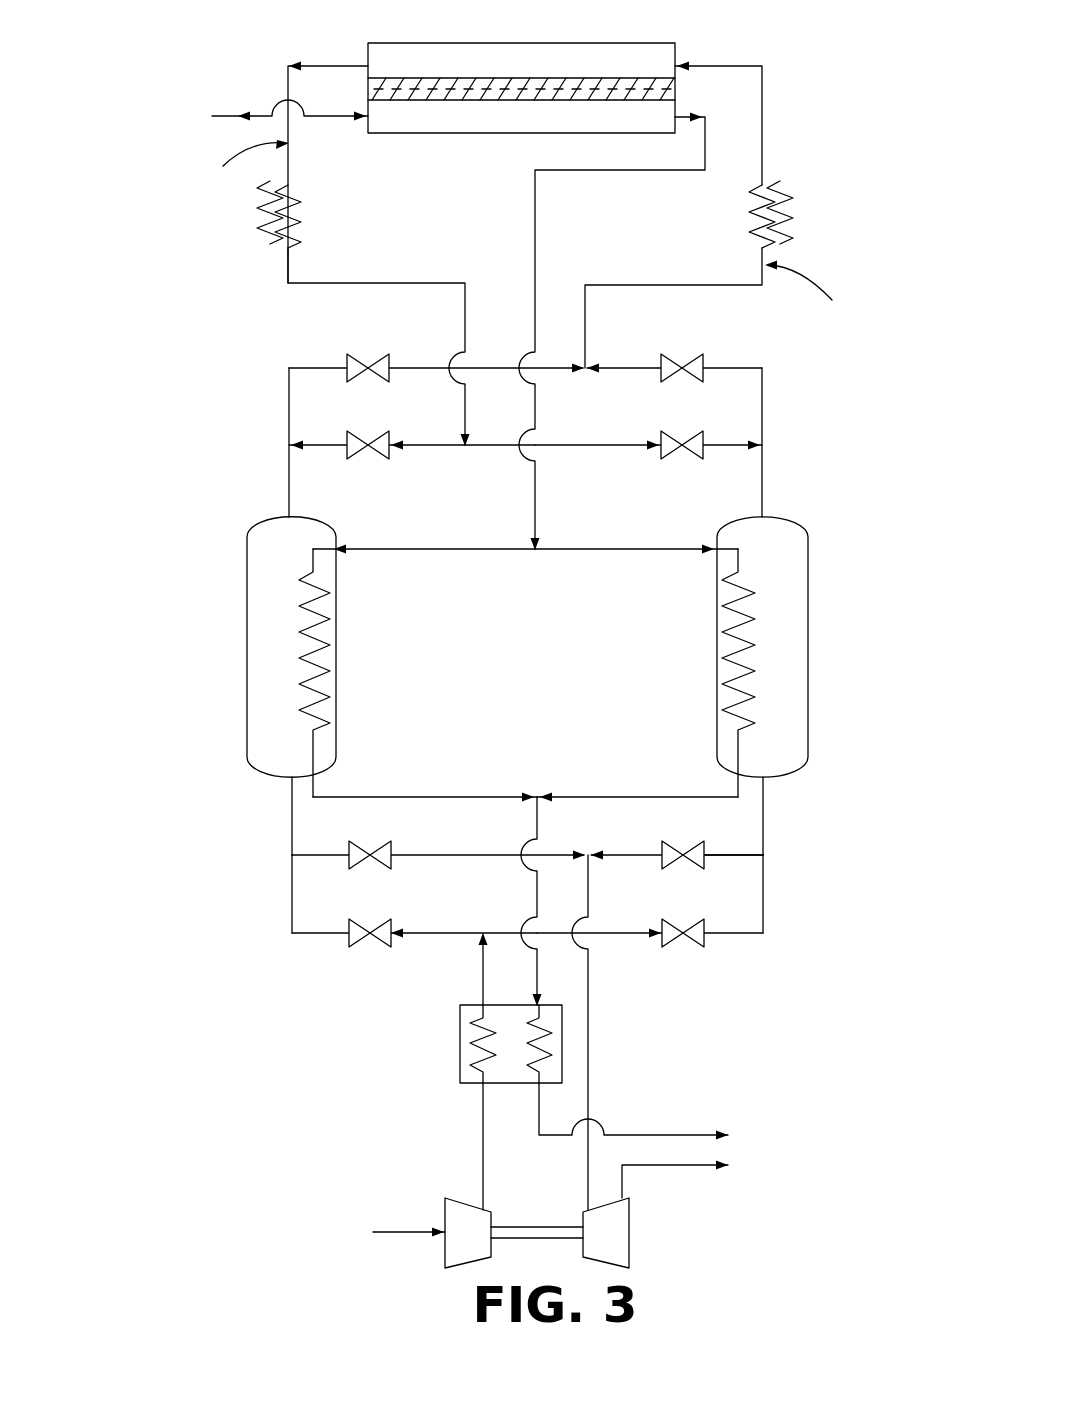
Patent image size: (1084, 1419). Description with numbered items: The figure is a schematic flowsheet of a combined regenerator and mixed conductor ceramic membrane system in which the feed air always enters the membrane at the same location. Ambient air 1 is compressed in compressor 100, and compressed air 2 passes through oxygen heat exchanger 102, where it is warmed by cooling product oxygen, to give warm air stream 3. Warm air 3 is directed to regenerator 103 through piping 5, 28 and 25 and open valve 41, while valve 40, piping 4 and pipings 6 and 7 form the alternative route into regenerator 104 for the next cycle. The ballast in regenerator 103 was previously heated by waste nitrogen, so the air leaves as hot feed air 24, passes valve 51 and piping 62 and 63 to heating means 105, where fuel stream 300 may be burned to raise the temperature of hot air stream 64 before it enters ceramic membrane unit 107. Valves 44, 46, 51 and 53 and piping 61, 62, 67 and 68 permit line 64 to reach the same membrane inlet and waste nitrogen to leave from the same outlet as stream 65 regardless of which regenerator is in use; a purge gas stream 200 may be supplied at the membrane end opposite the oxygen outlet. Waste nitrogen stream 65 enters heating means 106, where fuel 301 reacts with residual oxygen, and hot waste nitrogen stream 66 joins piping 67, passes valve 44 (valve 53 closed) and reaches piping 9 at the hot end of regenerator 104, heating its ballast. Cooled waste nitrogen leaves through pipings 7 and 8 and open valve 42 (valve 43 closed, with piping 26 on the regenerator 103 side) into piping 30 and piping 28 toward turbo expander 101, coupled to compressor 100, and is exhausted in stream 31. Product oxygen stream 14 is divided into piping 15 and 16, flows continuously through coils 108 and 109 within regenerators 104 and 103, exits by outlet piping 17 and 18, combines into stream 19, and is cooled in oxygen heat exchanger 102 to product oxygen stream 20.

The ambient air 1 is at (393, 1243).
The compressed air 2 is at (481, 1163).
The warm air stream 3 is at (480, 979).
The piping 4 is at (436, 931).
The piping 5 is at (623, 931).
The piping 6 is at (292, 893).
The piping 7 is at (291, 797).
The piping 8 is at (324, 853).
The piping 9 is at (289, 497).
The product oxygen stream 14 is at (533, 214).
The piping 15 is at (425, 548).
The piping 16 is at (616, 548).
The outlet piping 17 is at (434, 796).
The outlet piping 18 is at (612, 796).
The product oxygen stream 19 is at (535, 970).
The product oxygen stream 20 is at (660, 1133).
The hot feed air 24 is at (768, 483).
The piping 25 is at (767, 811).
The piping 26 is at (733, 853).
The piping 28 is at (768, 904).
The piping 30 is at (443, 853).
The piping 31 is at (628, 853).
The valve 40 is at (372, 939).
The valve 41 is at (686, 939).
The valve 42 is at (372, 861).
The valve 43 is at (686, 861).
The valve 44 is at (370, 451).
The valve 46 is at (370, 374).
The valve 51 is at (684, 374).
The valve 53 is at (684, 451).
The piping 61 is at (415, 366).
The piping 62 is at (630, 366).
The piping 63 is at (645, 285).
The hot air stream 64 is at (766, 89).
The waste nitrogen stream 65 is at (287, 76).
The hot waste nitrogen stream 66 is at (280, 273).
The piping 67 is at (430, 443).
The piping 68 is at (617, 443).
The compressor 100 is at (443, 1206).
The turbo expander 101 is at (631, 1238).
The oxygen heat exchanger 102 is at (458, 1050).
The regenerator 103 is at (814, 626).
The regenerator 104 is at (247, 645).
The heating means 105 is at (792, 216).
The heating means 106 is at (250, 214).
The mixed conductor ceramic membrane unit 107 is at (675, 43).
The coils of tubing 108 is at (325, 615).
The coils of tubing 109 is at (728, 612).
The purge gas stream 200 is at (216, 116).
The fuel stream 300 is at (814, 297).
The fuel 301 is at (239, 168).